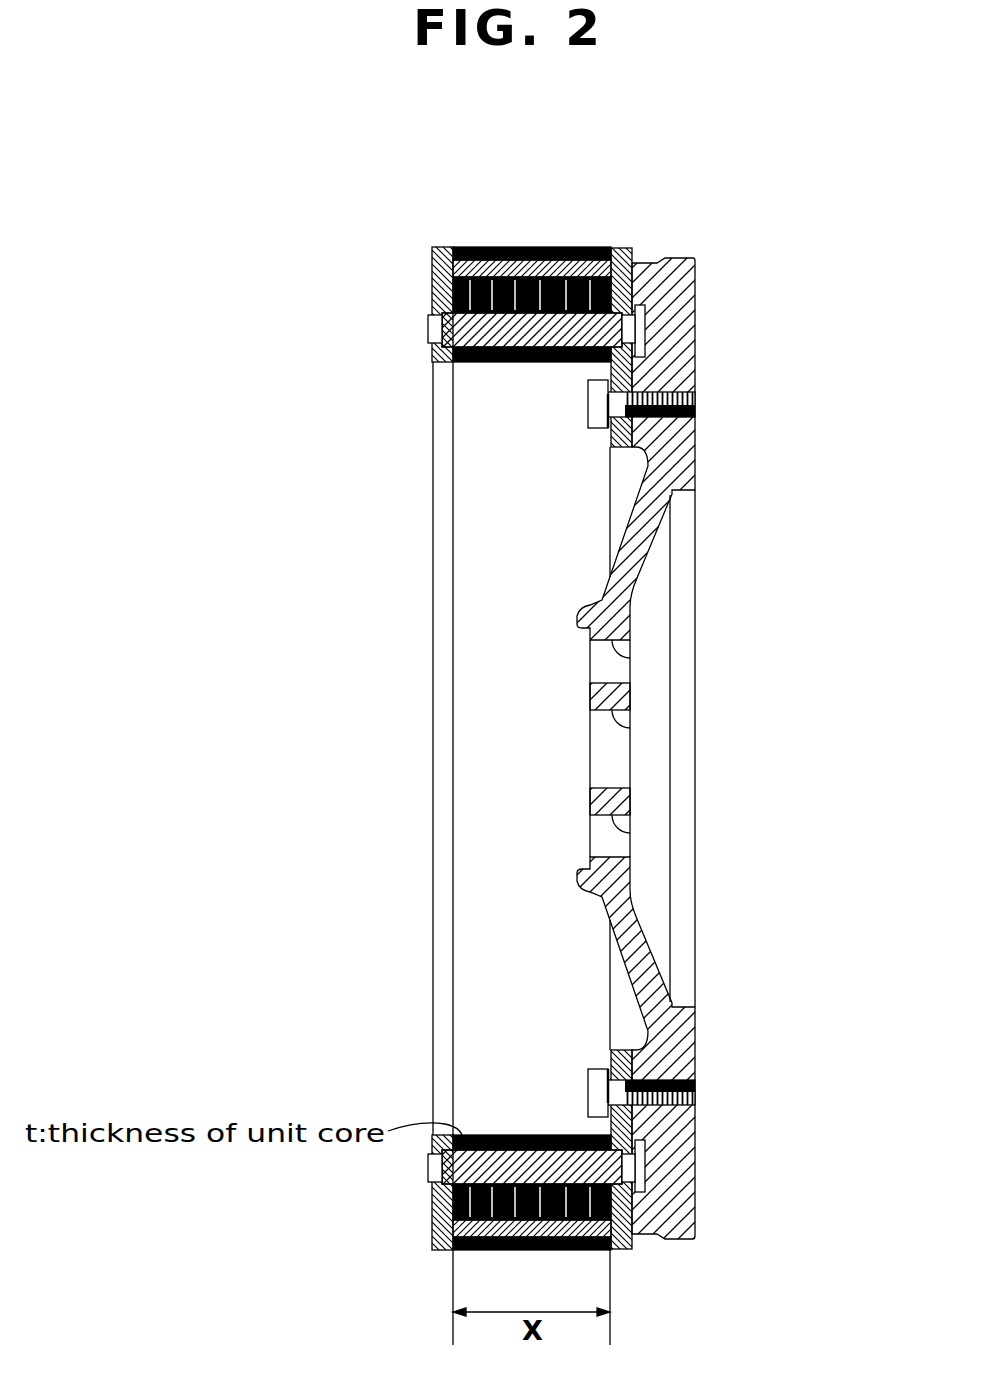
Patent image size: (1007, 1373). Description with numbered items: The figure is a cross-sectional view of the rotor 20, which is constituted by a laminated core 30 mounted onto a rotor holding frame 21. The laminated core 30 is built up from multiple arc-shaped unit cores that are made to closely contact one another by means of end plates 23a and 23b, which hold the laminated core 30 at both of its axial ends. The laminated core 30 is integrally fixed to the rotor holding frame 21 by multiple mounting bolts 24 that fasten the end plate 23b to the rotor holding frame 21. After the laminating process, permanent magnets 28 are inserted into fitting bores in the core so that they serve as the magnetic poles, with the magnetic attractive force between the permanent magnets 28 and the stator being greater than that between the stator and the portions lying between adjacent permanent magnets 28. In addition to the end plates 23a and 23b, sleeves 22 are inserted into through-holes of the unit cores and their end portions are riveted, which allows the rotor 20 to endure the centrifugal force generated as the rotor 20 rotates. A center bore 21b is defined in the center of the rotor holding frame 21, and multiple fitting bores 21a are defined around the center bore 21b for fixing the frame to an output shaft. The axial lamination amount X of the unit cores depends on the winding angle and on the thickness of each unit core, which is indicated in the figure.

The rotor 20 is at (688, 247).
The rotor holding frame 21 is at (690, 448).
The fitting bores 21a is at (630, 653).
The center bore 21b is at (630, 733).
The sleeves 22 is at (440, 300).
The end plate 23a is at (445, 248).
The end plate 23b is at (621, 248).
The mounting bolts 24 is at (590, 405).
The permanent magnets 28 is at (505, 248).
The laminated core 30 is at (560, 232).